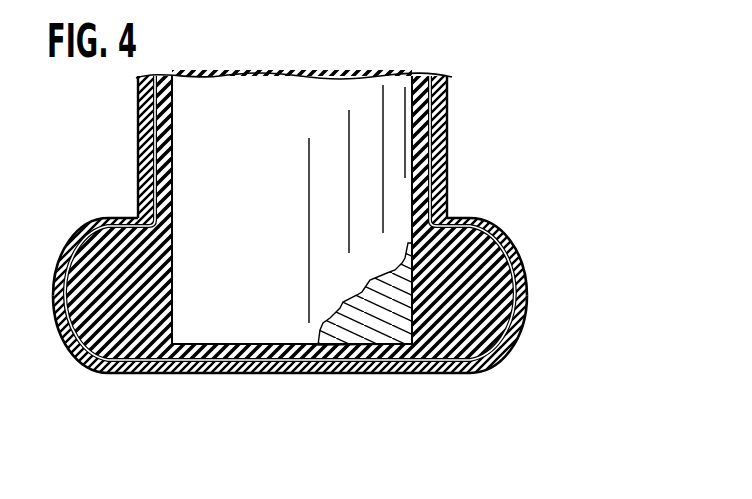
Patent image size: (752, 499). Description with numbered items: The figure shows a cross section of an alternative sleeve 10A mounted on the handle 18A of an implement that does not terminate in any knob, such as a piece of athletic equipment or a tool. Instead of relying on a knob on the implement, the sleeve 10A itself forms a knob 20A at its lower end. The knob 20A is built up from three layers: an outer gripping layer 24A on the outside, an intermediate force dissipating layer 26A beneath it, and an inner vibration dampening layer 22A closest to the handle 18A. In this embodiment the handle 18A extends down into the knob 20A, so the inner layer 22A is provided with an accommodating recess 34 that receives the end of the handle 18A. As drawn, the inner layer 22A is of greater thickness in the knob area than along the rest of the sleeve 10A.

The sleeve 10A is at (447, 147).
The handle 18A is at (368, 102).
The knob 20A is at (98, 217).
The inner vibration dampening layer 22A is at (88, 368).
The outer gripping layer 24A is at (466, 222).
The intermediate force dissipating layer 26A is at (473, 362).
The accommodating recess 34 is at (173, 318).